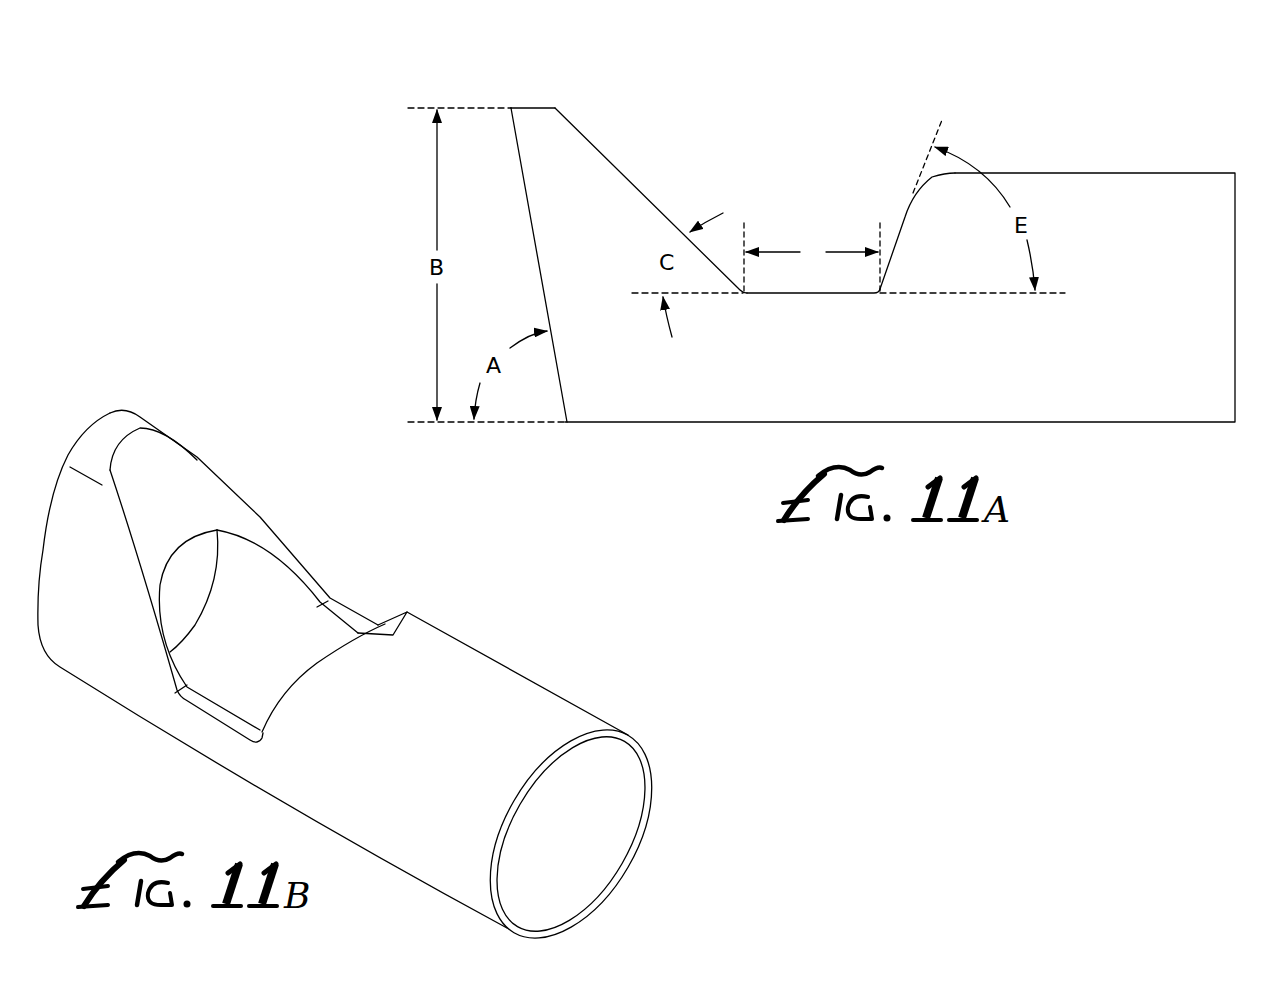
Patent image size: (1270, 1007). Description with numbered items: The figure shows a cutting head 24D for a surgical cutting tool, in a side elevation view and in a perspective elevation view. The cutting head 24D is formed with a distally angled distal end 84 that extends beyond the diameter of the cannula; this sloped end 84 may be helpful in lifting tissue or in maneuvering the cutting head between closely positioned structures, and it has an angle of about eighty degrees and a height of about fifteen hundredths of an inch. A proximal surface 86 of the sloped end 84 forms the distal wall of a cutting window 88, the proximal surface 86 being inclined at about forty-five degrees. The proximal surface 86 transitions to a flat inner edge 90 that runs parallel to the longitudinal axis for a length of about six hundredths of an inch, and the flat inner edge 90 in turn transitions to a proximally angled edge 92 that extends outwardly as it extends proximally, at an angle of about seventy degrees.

In FIG. 11A, the cutting head 24D is at (1024, 104).
In FIG. 11B, the cutting head 24D is at (504, 610).
In FIG. 11A, the distally angled distal end 84 is at (533, 107).
In FIG. 11A, the proximal surface 86 is at (622, 165).
In FIG. 11B, the proximal surface 86 is at (177, 488).
In FIG. 11A, the cutting window 88 is at (779, 168).
In FIG. 11B, the cutting window 88 is at (263, 624).
In FIG. 11A, the flat inner edge 90 is at (841, 292).
In FIG. 11A, the proximally angled edge 92 is at (905, 217).